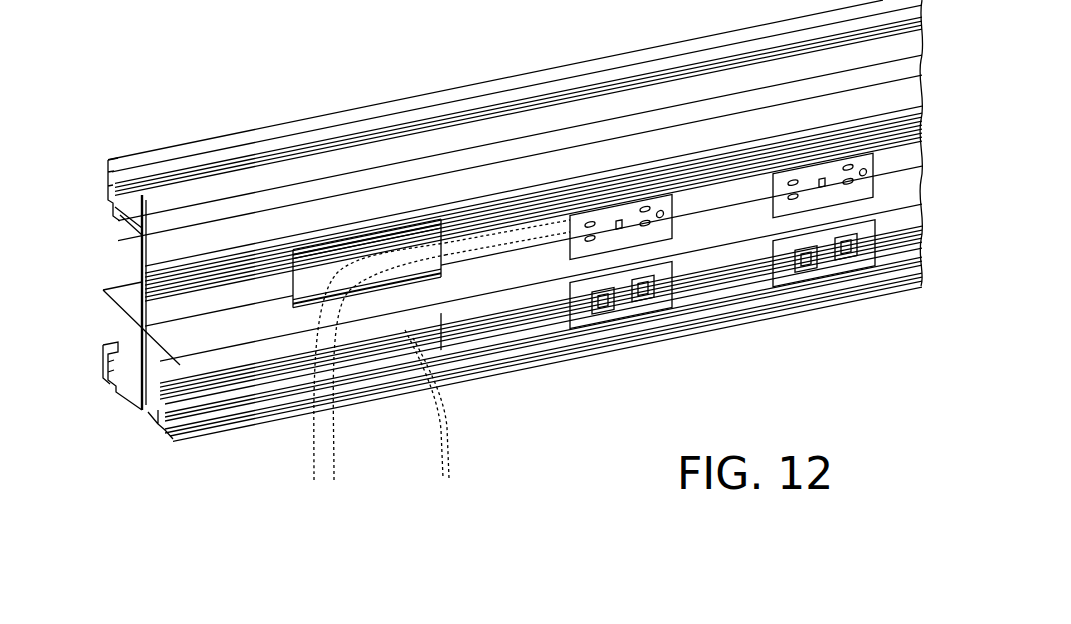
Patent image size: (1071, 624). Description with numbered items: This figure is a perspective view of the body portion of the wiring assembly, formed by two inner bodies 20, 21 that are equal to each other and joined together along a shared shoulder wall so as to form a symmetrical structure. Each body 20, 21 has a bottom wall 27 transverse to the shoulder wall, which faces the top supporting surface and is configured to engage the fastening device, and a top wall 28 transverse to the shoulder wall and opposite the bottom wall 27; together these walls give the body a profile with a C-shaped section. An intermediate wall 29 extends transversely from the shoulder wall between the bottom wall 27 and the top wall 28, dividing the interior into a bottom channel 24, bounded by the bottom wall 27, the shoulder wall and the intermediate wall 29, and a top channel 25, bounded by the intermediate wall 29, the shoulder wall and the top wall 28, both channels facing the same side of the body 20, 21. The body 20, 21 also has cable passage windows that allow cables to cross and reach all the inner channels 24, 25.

The body 20 is at (101, 118).
The body 21 is at (238, 456).
The bottom channel 24 is at (116, 344).
The top channel 25 is at (237, 210).
The bottom wall 27 is at (168, 420).
The top wall 28 is at (149, 198).
The intermediate wall 29 is at (126, 296).